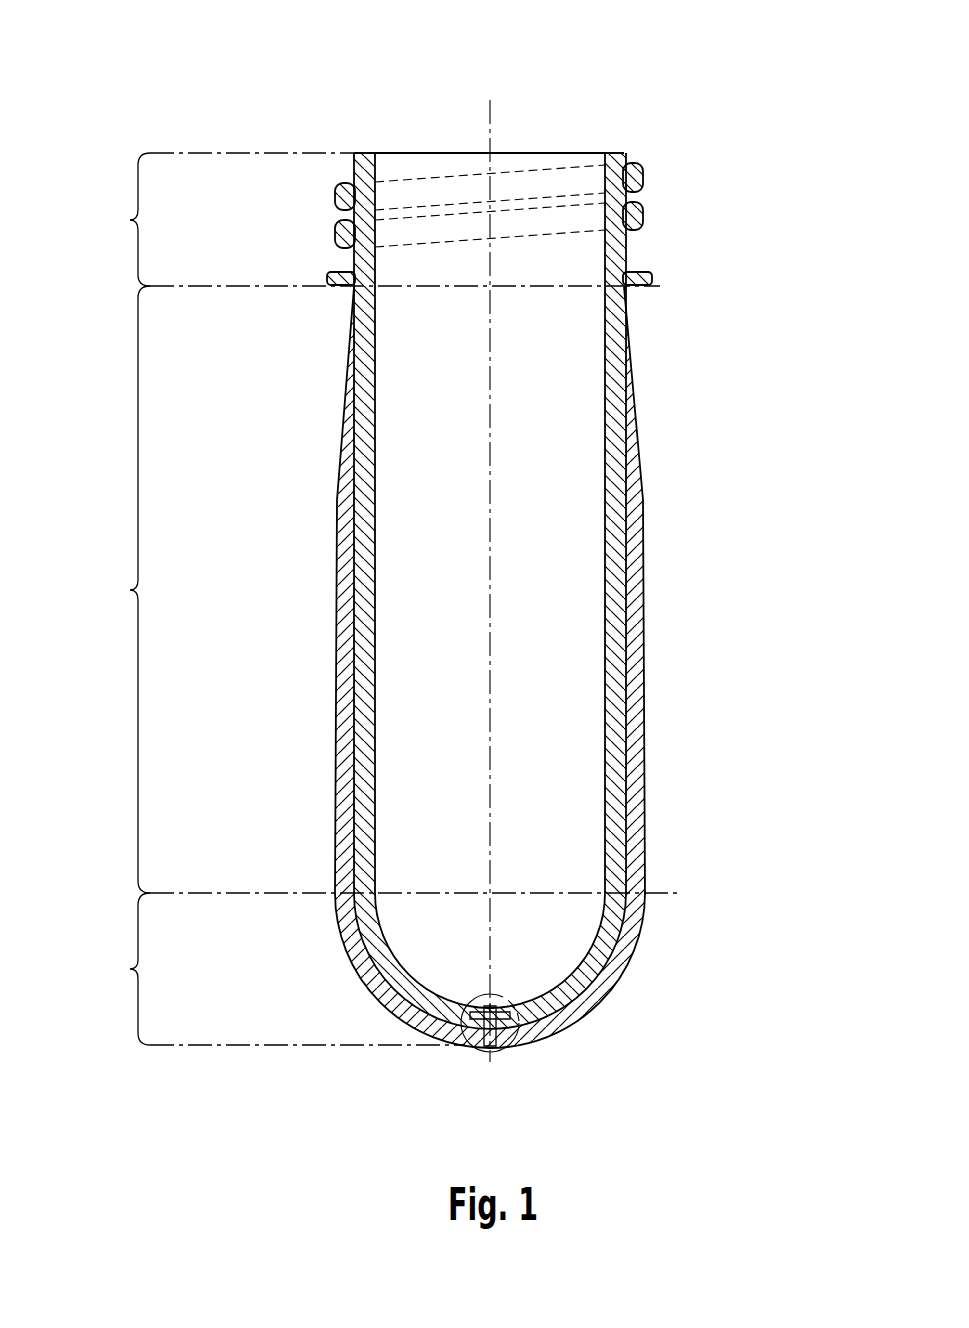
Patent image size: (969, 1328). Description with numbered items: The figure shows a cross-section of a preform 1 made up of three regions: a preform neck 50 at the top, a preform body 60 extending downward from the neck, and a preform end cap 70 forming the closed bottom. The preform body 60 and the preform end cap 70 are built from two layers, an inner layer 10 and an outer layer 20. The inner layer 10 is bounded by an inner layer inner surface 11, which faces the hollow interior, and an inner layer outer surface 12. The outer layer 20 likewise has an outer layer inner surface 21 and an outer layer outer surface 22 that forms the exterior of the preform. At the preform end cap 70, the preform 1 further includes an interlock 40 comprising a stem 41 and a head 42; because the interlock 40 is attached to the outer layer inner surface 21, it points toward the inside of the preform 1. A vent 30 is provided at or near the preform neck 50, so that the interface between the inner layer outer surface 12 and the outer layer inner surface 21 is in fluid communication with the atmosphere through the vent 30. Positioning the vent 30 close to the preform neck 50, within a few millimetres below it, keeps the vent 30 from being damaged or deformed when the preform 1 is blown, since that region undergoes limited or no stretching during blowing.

The preform 1 is at (492, 574).
The inner layer 10 is at (634, 525).
The inner layer inner surface 11 is at (604, 562).
The inner layer outer surface 12 is at (647, 583).
The outer layer 20 is at (342, 482).
The outer layer inner surface 21 is at (358, 540).
The outer layer outer surface 22 is at (336, 542).
The vent 30 is at (355, 300).
The interlock 40 is at (513, 1029).
The stem 41 is at (459, 1040).
The head 42 is at (497, 1008).
The preform neck 50 is at (379, 219).
The preform body 60 is at (389, 589).
The preform end cap 70 is at (281, 969).